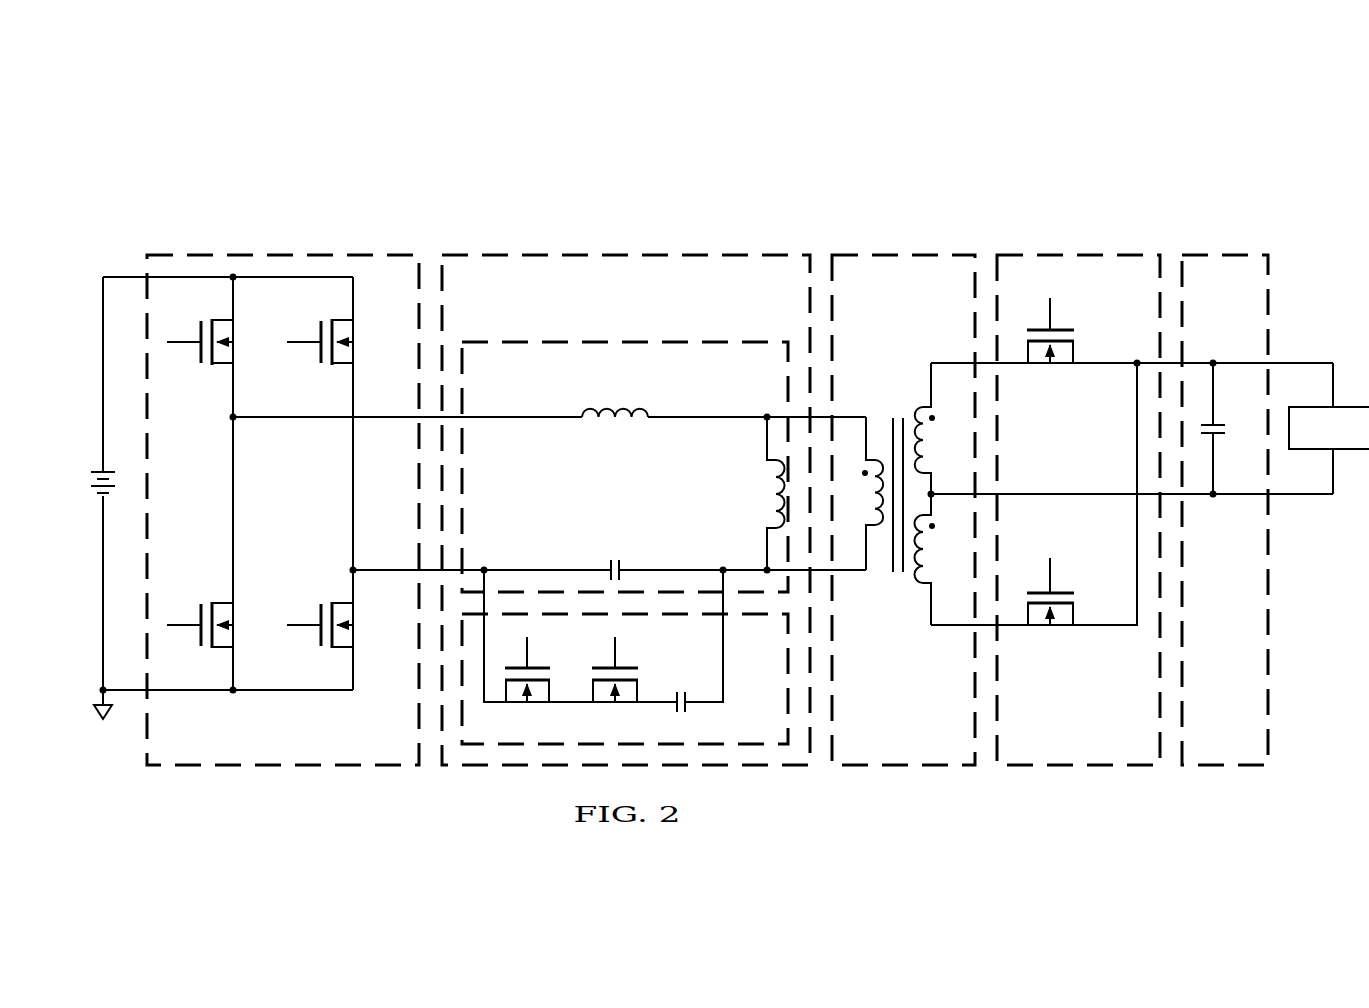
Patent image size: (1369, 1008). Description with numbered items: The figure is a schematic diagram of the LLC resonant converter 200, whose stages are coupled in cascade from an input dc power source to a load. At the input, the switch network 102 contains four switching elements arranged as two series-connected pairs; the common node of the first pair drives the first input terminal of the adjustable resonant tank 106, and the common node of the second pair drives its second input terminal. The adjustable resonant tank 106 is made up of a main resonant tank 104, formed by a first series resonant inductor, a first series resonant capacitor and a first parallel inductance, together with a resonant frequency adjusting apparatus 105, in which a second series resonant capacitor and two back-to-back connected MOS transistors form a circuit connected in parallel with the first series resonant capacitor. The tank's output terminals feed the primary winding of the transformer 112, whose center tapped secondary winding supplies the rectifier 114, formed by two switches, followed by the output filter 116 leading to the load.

The LLC resonant converter 200 is at (708, 429).
The switch network 102 is at (283, 476).
The main resonant tank 104 is at (549, 467).
The resonant frequency adjusting apparatus 105 is at (625, 657).
The adjustable resonant tank 106 is at (549, 476).
The transformer 112 is at (914, 476).
The rectifier 114 is at (1132, 476).
The output filter 116 is at (1275, 476).